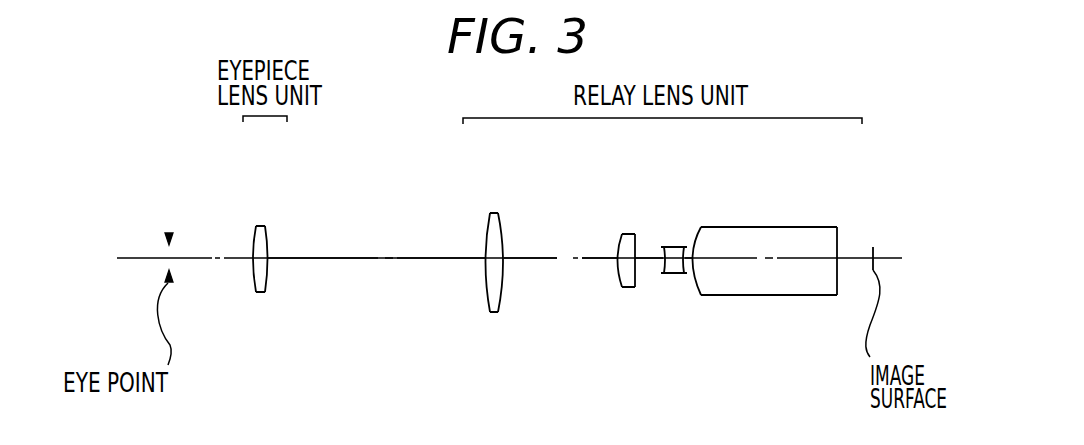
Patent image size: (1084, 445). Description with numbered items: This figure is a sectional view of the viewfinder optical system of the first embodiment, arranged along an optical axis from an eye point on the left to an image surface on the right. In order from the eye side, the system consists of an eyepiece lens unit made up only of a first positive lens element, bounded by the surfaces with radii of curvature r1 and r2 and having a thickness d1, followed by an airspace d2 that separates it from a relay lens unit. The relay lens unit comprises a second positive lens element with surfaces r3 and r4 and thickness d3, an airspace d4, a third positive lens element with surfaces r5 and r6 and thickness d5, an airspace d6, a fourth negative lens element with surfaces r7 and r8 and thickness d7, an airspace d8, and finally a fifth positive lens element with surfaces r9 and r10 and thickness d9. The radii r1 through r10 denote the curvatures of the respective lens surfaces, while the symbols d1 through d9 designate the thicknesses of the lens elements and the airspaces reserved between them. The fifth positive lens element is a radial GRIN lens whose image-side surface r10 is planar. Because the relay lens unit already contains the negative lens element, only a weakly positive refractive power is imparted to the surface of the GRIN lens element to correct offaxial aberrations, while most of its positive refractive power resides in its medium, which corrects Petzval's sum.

The radius of curvature of eye-side surface of first positive lens element r1 is at (253, 238).
The radius of curvature of image-side surface of first positive lens element r2 is at (268, 237).
The radius of curvature of eye-side surface of second positive lens element r3 is at (489, 232).
The radius of curvature of image-side surface of second positive lens element r4 is at (505, 230).
The radius of curvature of eye-side surface of third positive lens element r5 is at (618, 247).
The radius of curvature of image-side surface of third positive lens element r6 is at (635, 240).
The radius of curvature of eye-side surface of fourth negative lens element r7 is at (664, 247).
The radius of curvature of image-side surface of fourth negative lens element r8 is at (683, 246).
The radius of curvature of eye-side surface of fifth positive lens element r9 is at (690, 248).
The radius of curvature of image-side surface of fifth positive lens element r10 is at (838, 228).
The thickness of first positive lens element d1 is at (263, 262).
The airspace between first and second lens elements d2 is at (377, 258).
The thickness of second positive lens element d3 is at (497, 262).
The airspace between second and third lens elements d4 is at (566, 262).
The thickness of third positive lens element d5 is at (628, 283).
The airspace between third and fourth lens elements d6 is at (650, 262).
The thickness of fourth negative lens element d7 is at (672, 272).
The airspace between fourth and fifth lens elements d8 is at (692, 262).
The thickness of fifth positive lens element d9 is at (757, 263).